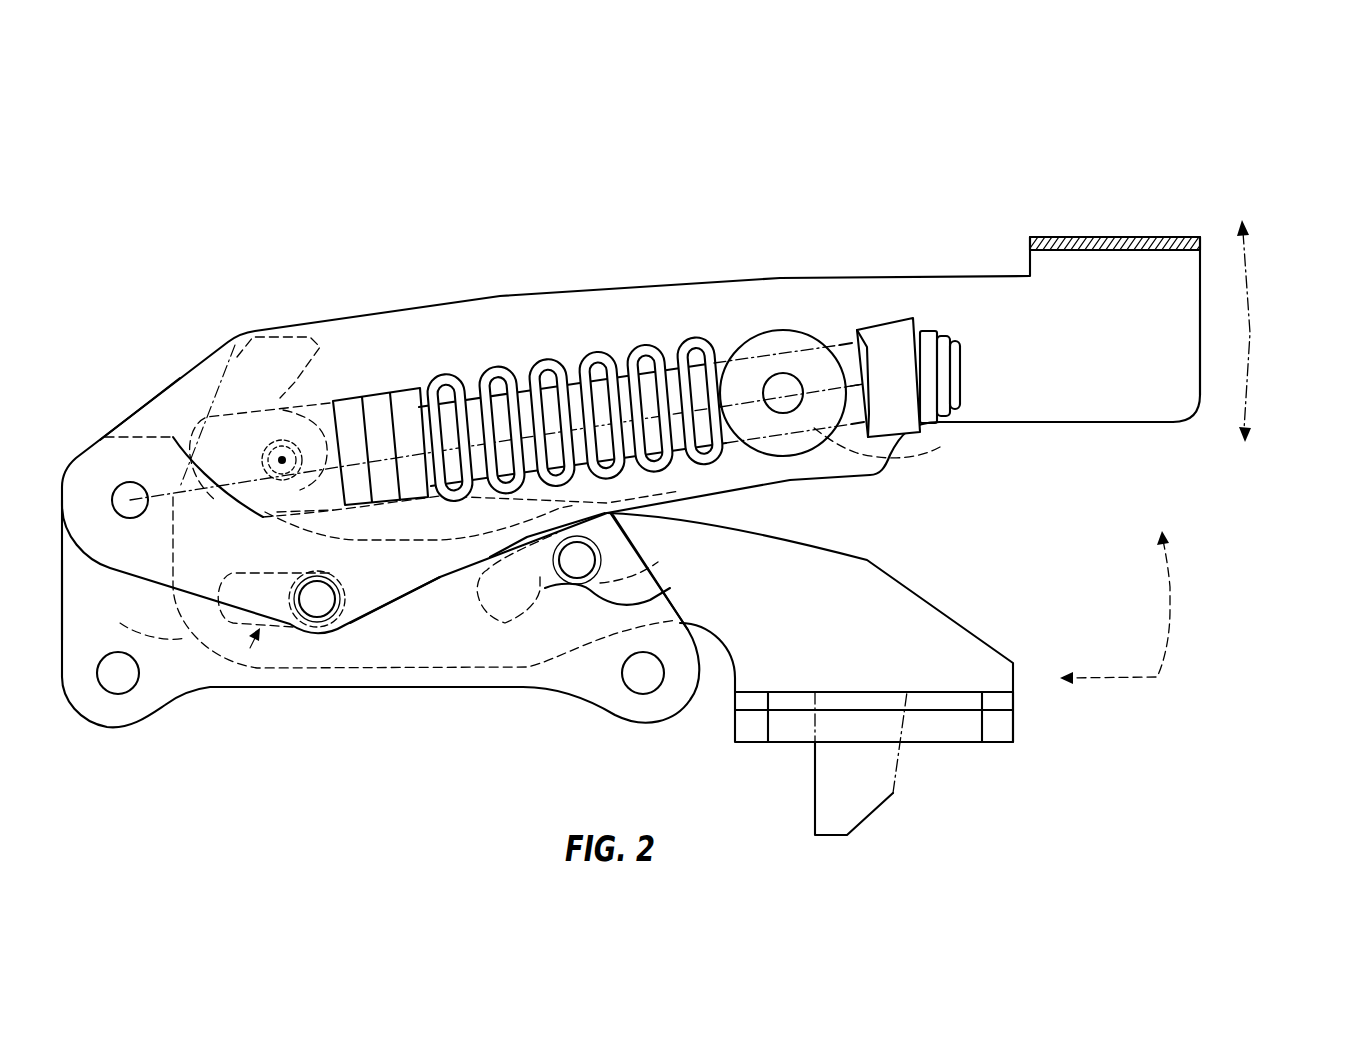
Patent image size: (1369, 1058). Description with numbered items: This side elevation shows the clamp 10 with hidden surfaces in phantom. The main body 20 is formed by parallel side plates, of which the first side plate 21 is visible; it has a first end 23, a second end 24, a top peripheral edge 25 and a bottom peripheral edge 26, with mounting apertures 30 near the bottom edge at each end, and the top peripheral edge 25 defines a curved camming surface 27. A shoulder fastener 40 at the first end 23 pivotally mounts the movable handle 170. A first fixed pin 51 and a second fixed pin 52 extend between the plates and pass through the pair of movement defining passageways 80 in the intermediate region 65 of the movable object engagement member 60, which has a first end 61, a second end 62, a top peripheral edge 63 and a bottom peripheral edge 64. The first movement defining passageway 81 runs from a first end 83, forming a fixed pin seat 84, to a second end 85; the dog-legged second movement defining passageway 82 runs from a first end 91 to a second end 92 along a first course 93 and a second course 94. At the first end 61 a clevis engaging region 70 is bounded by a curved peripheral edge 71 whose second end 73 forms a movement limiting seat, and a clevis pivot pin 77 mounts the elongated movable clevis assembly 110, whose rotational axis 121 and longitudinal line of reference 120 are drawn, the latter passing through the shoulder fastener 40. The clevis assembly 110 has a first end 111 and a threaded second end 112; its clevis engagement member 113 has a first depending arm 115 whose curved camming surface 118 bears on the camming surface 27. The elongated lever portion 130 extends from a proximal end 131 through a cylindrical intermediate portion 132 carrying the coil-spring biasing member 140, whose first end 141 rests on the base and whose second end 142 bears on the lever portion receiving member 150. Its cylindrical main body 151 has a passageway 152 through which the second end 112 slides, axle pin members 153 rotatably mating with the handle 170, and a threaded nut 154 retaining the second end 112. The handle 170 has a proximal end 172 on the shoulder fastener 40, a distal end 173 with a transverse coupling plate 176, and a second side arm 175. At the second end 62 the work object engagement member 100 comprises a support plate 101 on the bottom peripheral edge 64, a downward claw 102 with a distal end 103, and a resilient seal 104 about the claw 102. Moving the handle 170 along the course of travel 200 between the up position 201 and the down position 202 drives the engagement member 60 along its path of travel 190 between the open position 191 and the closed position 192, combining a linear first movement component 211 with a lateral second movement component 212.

The clamp 10 is at (204, 165).
The main body 20 is at (205, 753).
The first side plate 21 is at (523, 688).
The first end 23 is at (62, 603).
The second end 24 is at (650, 577).
The top peripheral edge 25 is at (413, 587).
The bottom peripheral edge 26 is at (373, 688).
The curved camming surface 27 is at (150, 507).
The mounting apertures 30 is at (117, 675).
The shoulder fastener 40 is at (113, 500).
The first fixed pin 51 is at (316, 618).
The second fixed pin 52 is at (662, 598).
The movable object engagement member 60 is at (902, 526).
The first end 61 is at (207, 417).
The second end 62 is at (927, 600).
The top peripheral edge 63 is at (808, 543).
The bottom peripheral edge 64 is at (728, 632).
The intermediate region 65 is at (407, 680).
The clevis engaging region 70 is at (351, 344).
The curved peripheral edge 71 is at (330, 385).
The second end 73 is at (243, 390).
The clevis pivot pin 77 is at (233, 380).
The movement defining passageways 80 is at (240, 690).
The first movement defining passageway 81 is at (293, 582).
The second movement defining passageway 82 is at (497, 587).
The first end 83 is at (183, 580).
The fixed pin seat 84 is at (227, 572).
The second end 85 is at (337, 620).
The first end 91 is at (477, 613).
The second end 92 is at (648, 573).
The first course 93 is at (515, 585).
The second course 94 is at (605, 519).
The work object engagement member 100 is at (1047, 717).
The support plate 101 is at (1017, 700).
The claw 102 is at (880, 767).
The distal end 103 is at (857, 813).
The resilient seal 104 is at (1017, 728).
The elongated movable clevis assembly 110 is at (683, 365).
The first end 111 is at (140, 394).
The second end 112 is at (955, 348).
The clevis engagement member 113 is at (408, 407).
The first depending arm 115 is at (175, 432).
The curved camming surface 118 is at (268, 480).
The longitudinal line of reference 120 is at (677, 367).
The rotational axis 121 is at (290, 462).
The elongated lever portion 130 is at (582, 360).
The proximal end 131 is at (435, 390).
The cylindrically shaped intermediate portion 132 is at (665, 440).
The biasing member 140 is at (603, 352).
The first end 141 is at (458, 374).
The second end 142 is at (700, 460).
The lever portion receiving member 150 is at (767, 256).
The main body 151 is at (767, 348).
The passageway 152 is at (896, 442).
The axle pin members 153 is at (787, 402).
The threaded nut 154 is at (887, 335).
The movable handle 170 is at (607, 243).
The proximal end 172 is at (127, 428).
The distal end 173 is at (1200, 322).
The second side arm 175 is at (1092, 407).
The coupling plate 176 is at (1133, 237).
The path of travel 190 is at (1172, 622).
The first open position 191 is at (1165, 562).
The second closed position 192 is at (1095, 680).
The course of travel 200 is at (1253, 337).
The first open or up position 201 is at (1243, 237).
The second closed or down position 202 is at (1262, 365).
The first movement component 211 is at (1262, 687).
The second movement component 212 is at (493, 627).